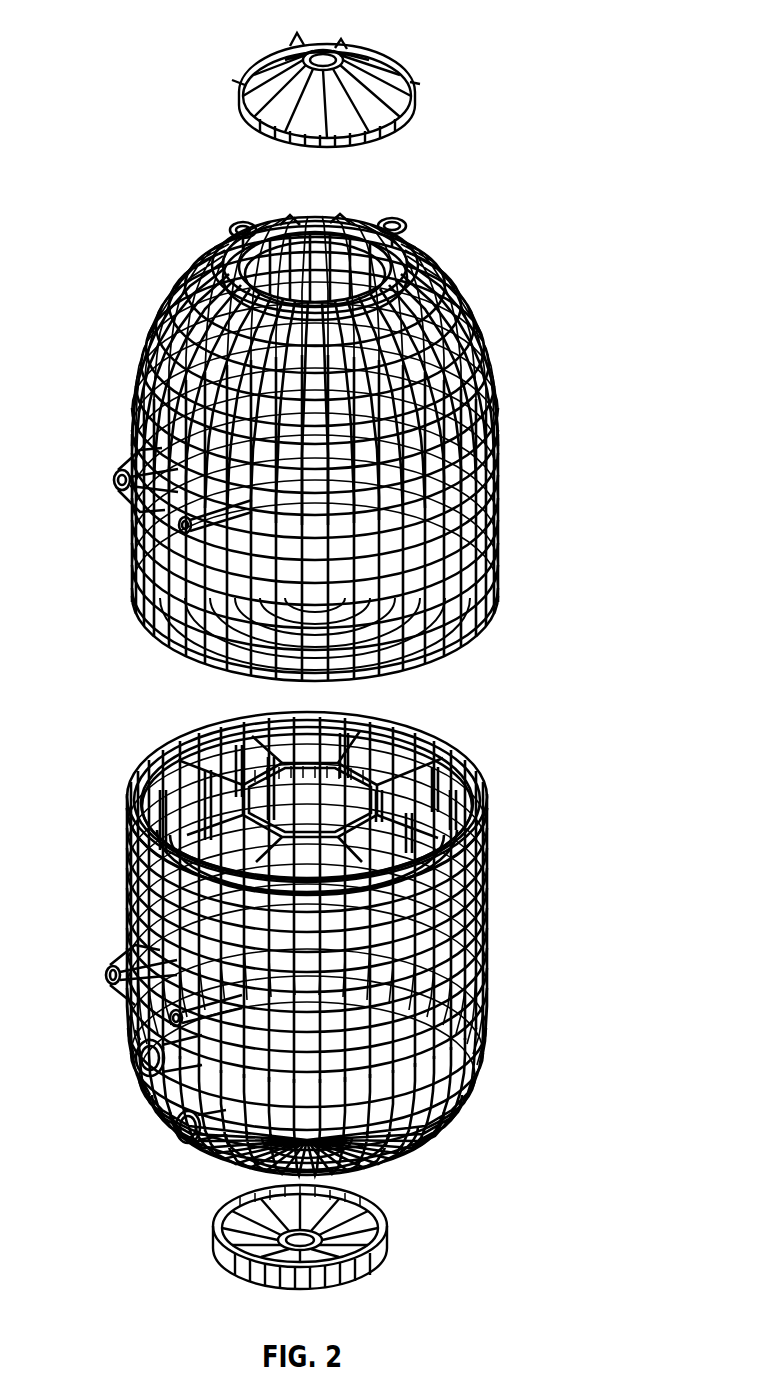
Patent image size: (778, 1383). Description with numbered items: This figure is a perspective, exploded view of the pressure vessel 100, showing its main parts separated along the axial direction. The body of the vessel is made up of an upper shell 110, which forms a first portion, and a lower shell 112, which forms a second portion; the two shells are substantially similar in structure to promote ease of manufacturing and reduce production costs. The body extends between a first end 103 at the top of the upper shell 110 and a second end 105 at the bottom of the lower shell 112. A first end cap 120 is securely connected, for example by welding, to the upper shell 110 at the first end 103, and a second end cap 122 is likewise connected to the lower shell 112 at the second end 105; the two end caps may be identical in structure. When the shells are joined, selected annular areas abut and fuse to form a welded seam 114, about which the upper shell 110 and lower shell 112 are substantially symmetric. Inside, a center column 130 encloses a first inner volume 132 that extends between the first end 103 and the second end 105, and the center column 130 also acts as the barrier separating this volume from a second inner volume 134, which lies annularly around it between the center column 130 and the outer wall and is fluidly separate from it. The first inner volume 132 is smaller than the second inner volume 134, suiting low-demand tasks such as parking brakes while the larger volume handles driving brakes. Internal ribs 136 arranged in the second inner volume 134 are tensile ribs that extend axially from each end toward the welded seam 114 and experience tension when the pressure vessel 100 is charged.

The pressure vessel 100 is at (582, 28).
The first end cap 120 is at (246, 60).
The upper shell 110 is at (598, 402).
The first end 103 is at (414, 245).
The lower shell 112 is at (532, 1045).
The center column 130 is at (138, 776).
The first inner volume 132 is at (233, 720).
The second inner volume 134 is at (490, 872).
The welded seam 114 is at (388, 726).
The internal ribs 136 is at (430, 768).
The second end 105 is at (380, 1157).
The second end cap 122 is at (253, 1287).